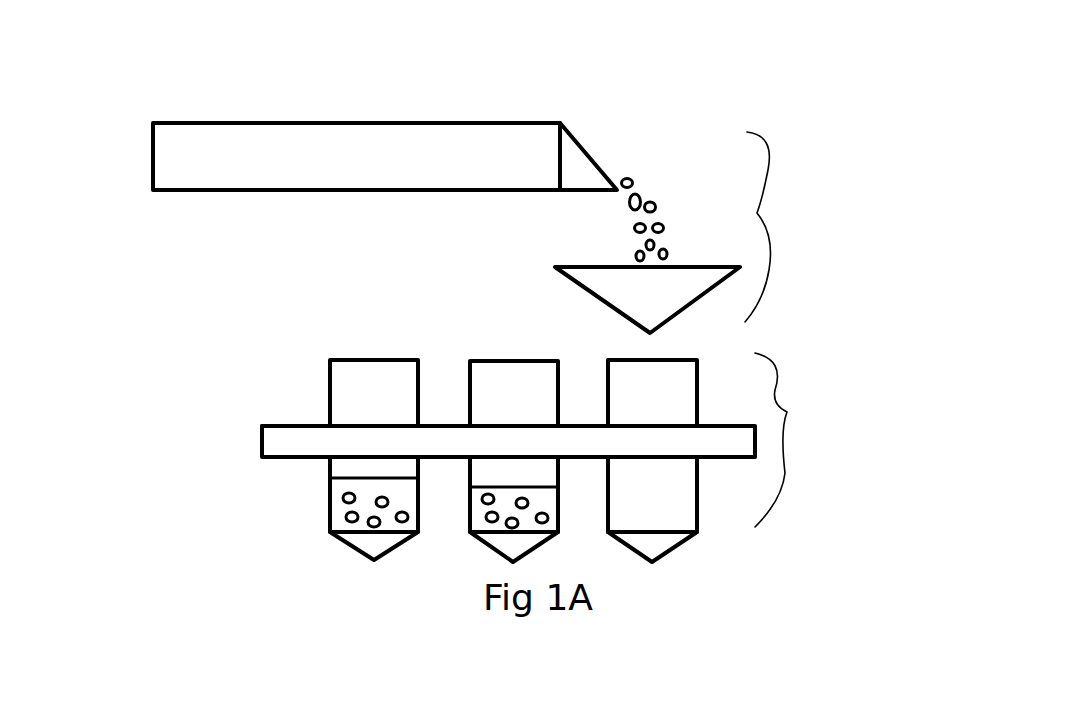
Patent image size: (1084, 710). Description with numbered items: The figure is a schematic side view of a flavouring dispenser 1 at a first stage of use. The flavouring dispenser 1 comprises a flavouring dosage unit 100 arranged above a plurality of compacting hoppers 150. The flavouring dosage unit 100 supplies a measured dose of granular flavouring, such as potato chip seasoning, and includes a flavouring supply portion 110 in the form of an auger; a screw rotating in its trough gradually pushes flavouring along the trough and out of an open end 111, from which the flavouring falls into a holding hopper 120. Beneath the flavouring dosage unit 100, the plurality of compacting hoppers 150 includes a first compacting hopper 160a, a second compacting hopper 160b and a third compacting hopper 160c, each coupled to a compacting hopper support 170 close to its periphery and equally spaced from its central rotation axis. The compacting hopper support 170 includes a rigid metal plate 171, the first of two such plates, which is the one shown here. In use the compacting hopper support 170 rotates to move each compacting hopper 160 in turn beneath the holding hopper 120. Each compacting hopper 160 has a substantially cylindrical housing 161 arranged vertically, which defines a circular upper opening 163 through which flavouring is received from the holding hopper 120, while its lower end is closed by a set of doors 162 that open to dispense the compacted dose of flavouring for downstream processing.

The flavouring dispenser 1 is at (122, 319).
The flavouring dosage unit 100 is at (757, 213).
The flavouring supply portion 110 is at (512, 120).
The open end 111 is at (595, 155).
The holding hopper 120 is at (577, 288).
The plurality of compacting hoppers 150 is at (787, 412).
The compacting hopper 160 is at (323, 477).
The first compacting hopper 160a is at (702, 503).
The second compacting hopper 160b is at (466, 360).
The third compacting hopper 160c is at (330, 385).
The substantially cylindrical housing 161 is at (608, 500).
The set of doors 162 is at (673, 555).
The circular upper opening 163 is at (678, 352).
The compacting hopper support 170 is at (258, 445).
The rigid metal plate 171 is at (278, 425).